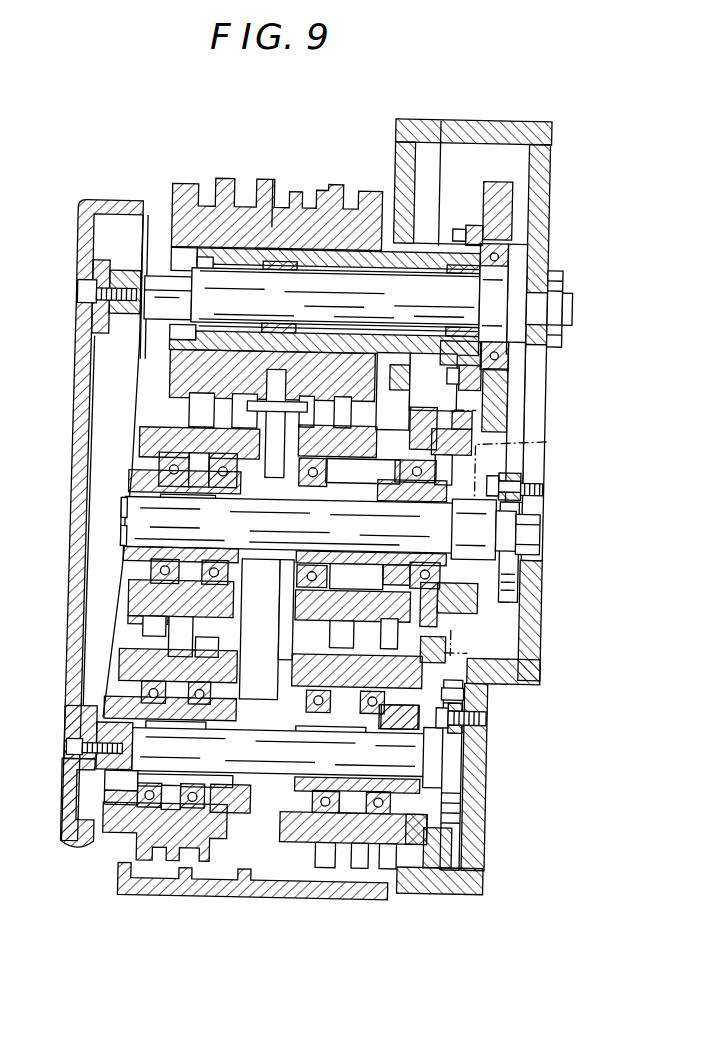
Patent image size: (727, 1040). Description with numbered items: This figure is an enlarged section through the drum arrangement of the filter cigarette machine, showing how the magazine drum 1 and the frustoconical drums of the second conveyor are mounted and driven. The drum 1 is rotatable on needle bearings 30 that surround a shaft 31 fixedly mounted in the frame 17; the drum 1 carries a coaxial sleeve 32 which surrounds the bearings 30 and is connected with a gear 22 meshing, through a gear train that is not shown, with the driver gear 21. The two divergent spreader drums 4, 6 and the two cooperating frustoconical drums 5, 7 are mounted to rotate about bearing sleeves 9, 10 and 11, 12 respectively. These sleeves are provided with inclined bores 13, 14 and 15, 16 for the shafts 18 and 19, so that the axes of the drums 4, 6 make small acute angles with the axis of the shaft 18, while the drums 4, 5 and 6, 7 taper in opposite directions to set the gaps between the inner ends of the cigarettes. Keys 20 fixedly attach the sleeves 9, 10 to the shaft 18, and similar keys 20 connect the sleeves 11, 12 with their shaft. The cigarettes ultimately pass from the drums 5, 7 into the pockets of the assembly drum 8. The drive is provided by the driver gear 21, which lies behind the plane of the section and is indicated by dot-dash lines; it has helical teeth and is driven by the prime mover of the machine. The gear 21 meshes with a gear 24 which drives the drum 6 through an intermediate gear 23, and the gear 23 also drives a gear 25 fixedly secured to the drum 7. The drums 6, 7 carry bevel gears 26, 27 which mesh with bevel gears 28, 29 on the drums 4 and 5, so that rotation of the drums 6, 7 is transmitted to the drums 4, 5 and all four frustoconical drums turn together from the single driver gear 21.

The drum 1 is at (166, 216).
The spreader drum 4 is at (130, 598).
The frustoconical drum 5 is at (120, 836).
The spreader drum 6 is at (418, 612).
The frustoconical drum 7 is at (308, 858).
The assembly drum 8 is at (148, 894).
The bearing sleeve 9 is at (130, 480).
The bearing sleeve 10 is at (444, 498).
The bearing sleeve 11 is at (112, 722).
The bearing sleeve 12 is at (411, 728).
The inclined bore 13 is at (126, 542).
The inclined bore 14 is at (356, 550).
The inclined bore 15 is at (212, 778).
The inclined bore 16 is at (368, 776).
The frame 17 is at (492, 787).
The shaft 18 is at (126, 508).
The shaft 19 is at (84, 762).
The key 20 is at (176, 500).
The driver gear 21 is at (507, 534).
The gear 22 is at (490, 190).
The intermediate gear 23 is at (428, 428).
The gear 24 is at (470, 446).
The gear 25 is at (478, 846).
The bevel gear 26 is at (278, 608).
The bevel gear 27 is at (290, 812).
The bevel gear 28 is at (250, 600).
The bevel gear 29 is at (225, 822).
The needle bearing 30 is at (290, 272).
The shaft 31 is at (128, 274).
The coaxial sleeve 32 is at (438, 262).